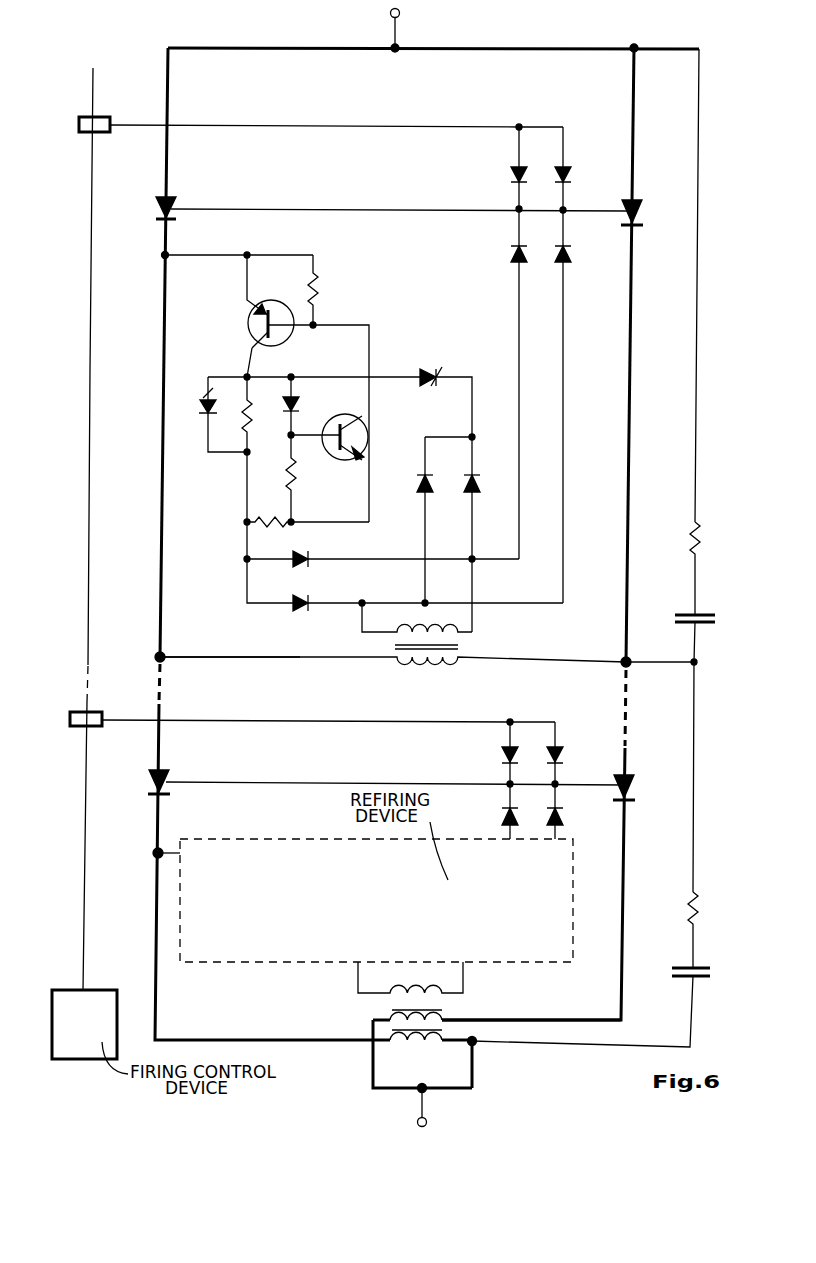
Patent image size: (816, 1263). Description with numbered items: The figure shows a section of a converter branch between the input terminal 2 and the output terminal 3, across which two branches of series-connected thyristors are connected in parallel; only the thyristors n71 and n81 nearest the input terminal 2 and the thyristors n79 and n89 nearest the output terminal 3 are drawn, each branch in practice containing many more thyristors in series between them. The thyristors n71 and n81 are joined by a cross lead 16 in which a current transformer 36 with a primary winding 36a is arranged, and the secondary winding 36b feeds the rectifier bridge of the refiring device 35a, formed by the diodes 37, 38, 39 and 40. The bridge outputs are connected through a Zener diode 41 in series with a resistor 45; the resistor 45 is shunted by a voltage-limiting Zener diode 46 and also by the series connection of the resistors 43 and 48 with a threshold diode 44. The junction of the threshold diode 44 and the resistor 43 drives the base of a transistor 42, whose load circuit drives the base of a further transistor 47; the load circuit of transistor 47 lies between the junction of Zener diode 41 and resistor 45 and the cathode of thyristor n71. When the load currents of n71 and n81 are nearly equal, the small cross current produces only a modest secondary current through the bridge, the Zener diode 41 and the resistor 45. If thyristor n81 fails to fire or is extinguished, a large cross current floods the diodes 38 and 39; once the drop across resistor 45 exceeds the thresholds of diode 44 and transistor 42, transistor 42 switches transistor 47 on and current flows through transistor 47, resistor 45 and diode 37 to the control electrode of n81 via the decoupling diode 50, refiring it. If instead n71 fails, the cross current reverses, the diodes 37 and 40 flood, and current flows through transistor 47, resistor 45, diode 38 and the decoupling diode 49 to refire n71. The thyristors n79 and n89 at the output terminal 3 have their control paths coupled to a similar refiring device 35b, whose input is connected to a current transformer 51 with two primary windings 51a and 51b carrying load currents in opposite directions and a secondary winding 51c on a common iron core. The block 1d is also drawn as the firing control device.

The input terminal 2 is at (403, 28).
The output terminal 3 is at (430, 1109).
The thyristor n71 is at (171, 203).
The thyristor n81 is at (637, 205).
The thyristor n79 is at (165, 775).
The thyristor n89 is at (629, 778).
The decoupling diode 49 is at (509, 258).
The decoupling diode 50 is at (571, 258).
The refiring device 35a is at (364, 442).
The refiring device 35b is at (398, 903).
The transistor 47 is at (286, 340).
The Zener diode 46 is at (204, 403).
The resistor 45 is at (252, 428).
The threshold diode 44 is at (300, 405).
The resistor 43 is at (297, 478).
The transistor 42 is at (368, 440).
The Zener diode 41 is at (428, 384).
The diode 39 is at (416, 486).
The diode 40 is at (481, 486).
The resistor 48 is at (278, 515).
The diode 38 is at (292, 563).
The diode 37 is at (292, 606).
The current transformer 36 is at (393, 648).
The primary winding 36a is at (440, 665).
The secondary winding 36b is at (455, 634).
The cross lead 16 is at (282, 662).
The current transformer 51 is at (485, 1025).
The primary winding 51a is at (430, 1048).
The primary winding 51b is at (440, 1020).
The secondary winding 51c is at (442, 994).
The firing control device 1d is at (84, 1024).